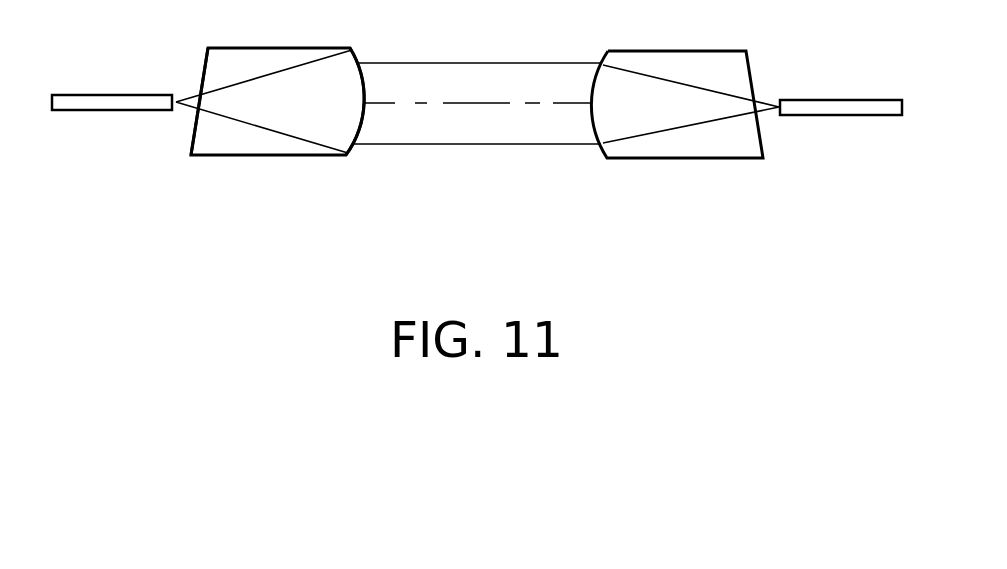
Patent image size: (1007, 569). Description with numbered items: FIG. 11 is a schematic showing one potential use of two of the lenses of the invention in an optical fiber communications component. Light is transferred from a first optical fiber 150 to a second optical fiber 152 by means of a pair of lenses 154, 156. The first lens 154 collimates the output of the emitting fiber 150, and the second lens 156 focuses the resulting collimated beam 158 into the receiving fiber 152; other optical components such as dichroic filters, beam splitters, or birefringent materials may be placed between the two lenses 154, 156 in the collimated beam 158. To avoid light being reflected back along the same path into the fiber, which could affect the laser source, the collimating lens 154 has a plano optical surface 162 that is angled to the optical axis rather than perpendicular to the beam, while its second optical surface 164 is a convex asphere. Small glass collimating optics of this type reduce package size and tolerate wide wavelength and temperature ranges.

The first optical fiber 150 is at (88, 111).
The second optical fiber 152 is at (840, 117).
The first lens 154 is at (267, 156).
The second lens 156 is at (683, 159).
The collimated beam 158 is at (507, 62).
The plano optical surface 162 is at (204, 68).
The second optical surface 164 is at (348, 50).